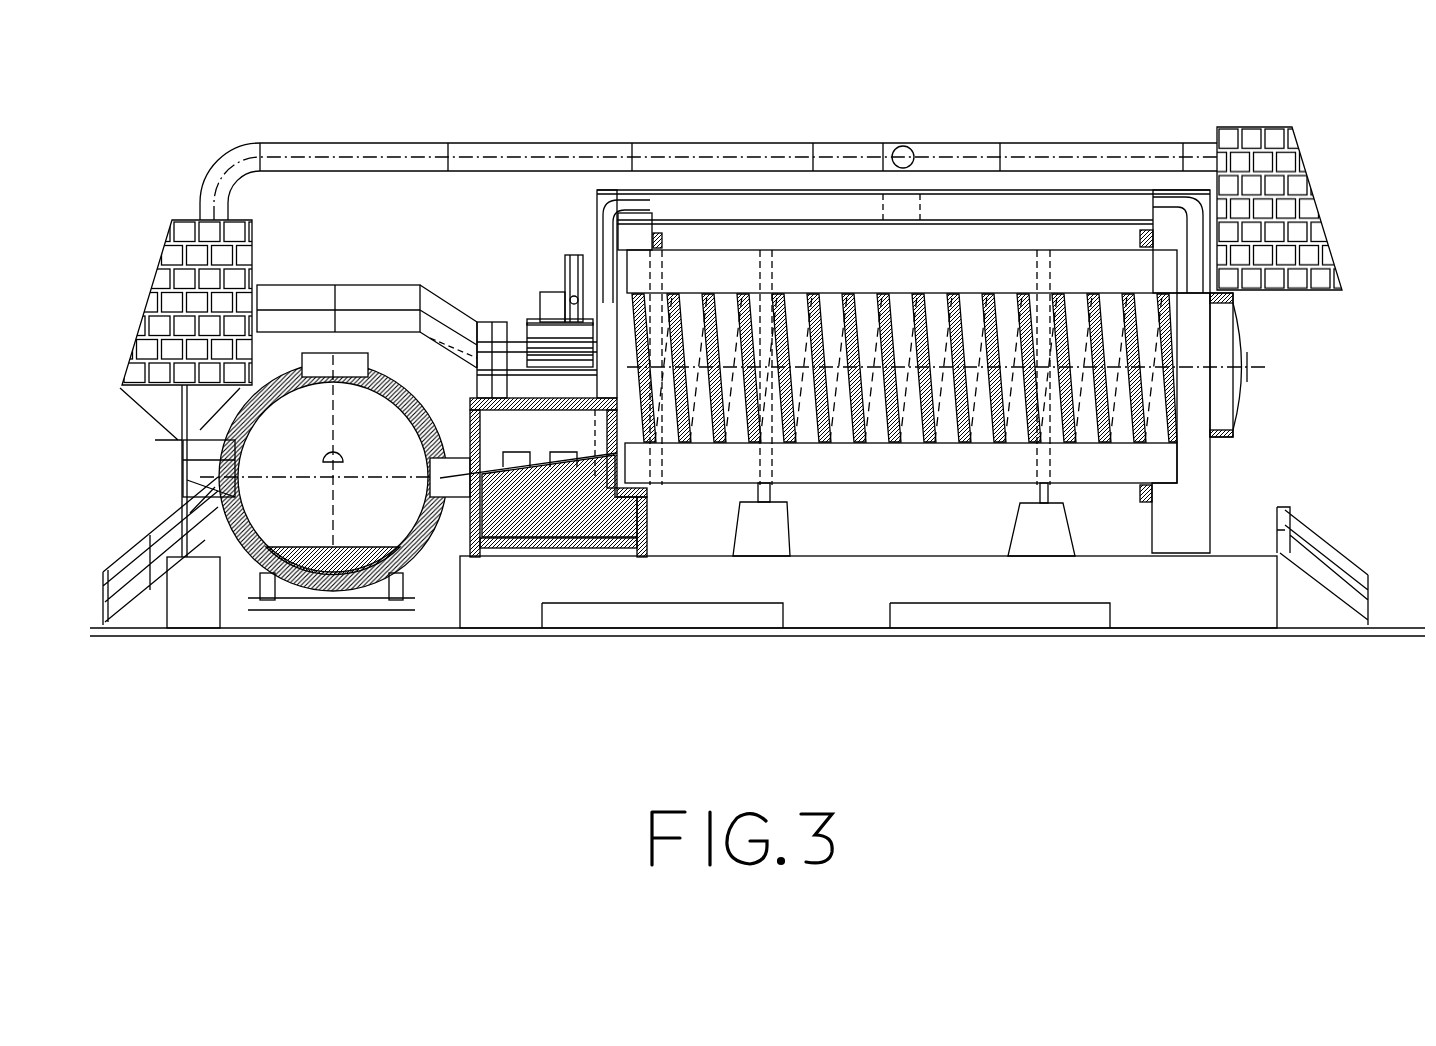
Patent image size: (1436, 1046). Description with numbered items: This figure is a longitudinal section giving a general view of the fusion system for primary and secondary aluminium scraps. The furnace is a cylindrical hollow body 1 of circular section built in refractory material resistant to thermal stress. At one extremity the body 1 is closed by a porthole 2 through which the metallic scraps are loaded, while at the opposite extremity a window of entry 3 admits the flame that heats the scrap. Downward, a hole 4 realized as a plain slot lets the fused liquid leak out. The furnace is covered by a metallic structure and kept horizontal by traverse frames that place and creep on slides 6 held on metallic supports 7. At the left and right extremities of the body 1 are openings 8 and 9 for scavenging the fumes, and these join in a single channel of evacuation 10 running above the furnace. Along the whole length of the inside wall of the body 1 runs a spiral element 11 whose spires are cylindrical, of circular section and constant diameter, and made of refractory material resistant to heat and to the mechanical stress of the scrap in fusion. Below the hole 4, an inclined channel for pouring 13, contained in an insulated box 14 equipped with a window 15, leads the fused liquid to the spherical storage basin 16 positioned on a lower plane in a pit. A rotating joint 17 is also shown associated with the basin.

The cylindrical hollow body 1 is at (1160, 456).
The porthole 2 is at (1223, 345).
The window of entry 3 is at (592, 318).
The hole 4 is at (613, 462).
The slides 6 is at (785, 510).
The metallic supports 7 is at (1050, 535).
The opening 8 is at (656, 208).
The opening 9 is at (1172, 215).
The channel of evacuation 10 is at (905, 205).
The spiral element 11 is at (985, 445).
The channel for pouring 13 is at (517, 466).
The box 14 is at (560, 470).
The window 15 is at (527, 462).
The spherical storage basin 16 is at (300, 590).
The rotating joint 17 is at (453, 470).